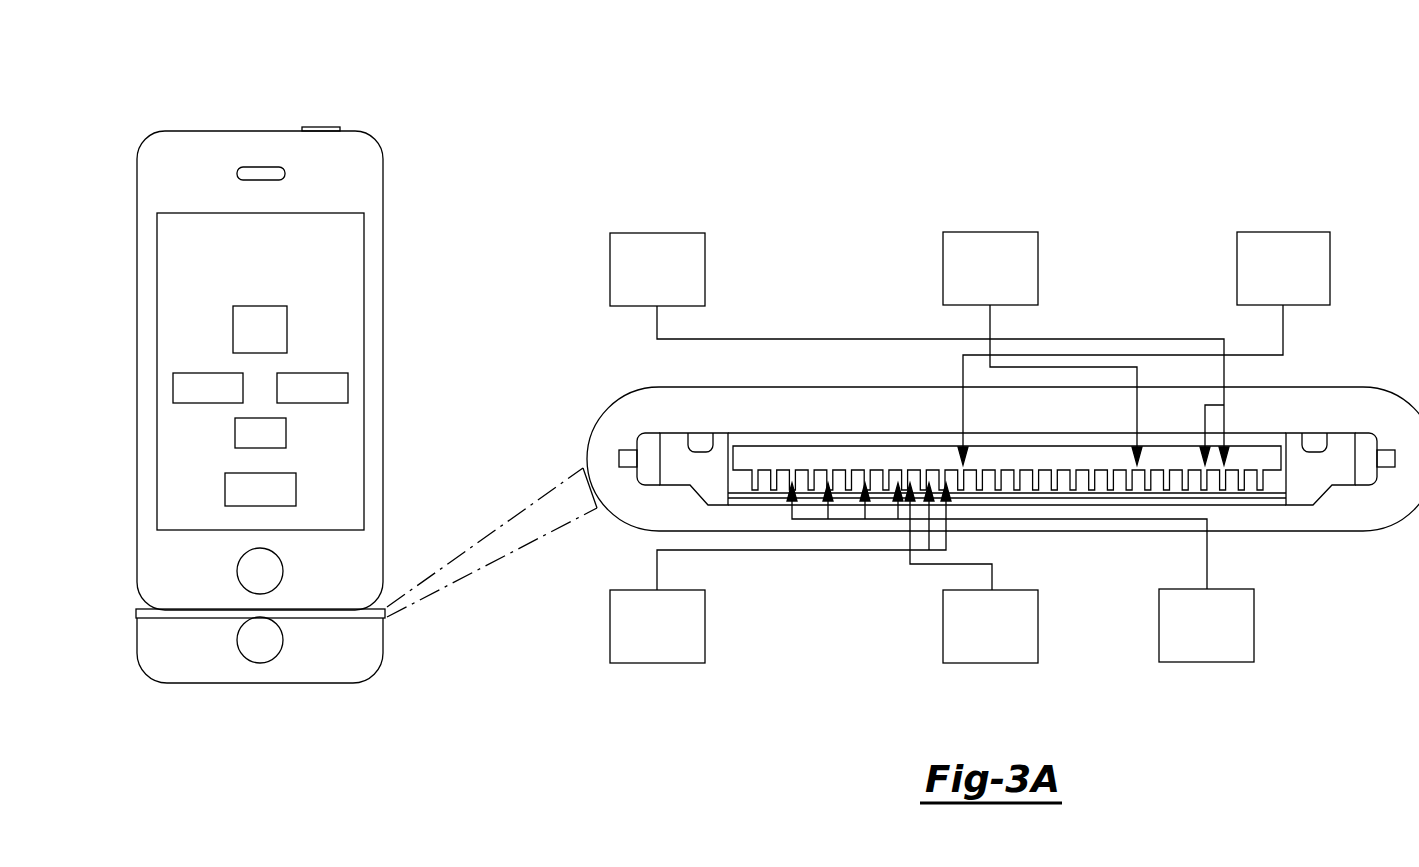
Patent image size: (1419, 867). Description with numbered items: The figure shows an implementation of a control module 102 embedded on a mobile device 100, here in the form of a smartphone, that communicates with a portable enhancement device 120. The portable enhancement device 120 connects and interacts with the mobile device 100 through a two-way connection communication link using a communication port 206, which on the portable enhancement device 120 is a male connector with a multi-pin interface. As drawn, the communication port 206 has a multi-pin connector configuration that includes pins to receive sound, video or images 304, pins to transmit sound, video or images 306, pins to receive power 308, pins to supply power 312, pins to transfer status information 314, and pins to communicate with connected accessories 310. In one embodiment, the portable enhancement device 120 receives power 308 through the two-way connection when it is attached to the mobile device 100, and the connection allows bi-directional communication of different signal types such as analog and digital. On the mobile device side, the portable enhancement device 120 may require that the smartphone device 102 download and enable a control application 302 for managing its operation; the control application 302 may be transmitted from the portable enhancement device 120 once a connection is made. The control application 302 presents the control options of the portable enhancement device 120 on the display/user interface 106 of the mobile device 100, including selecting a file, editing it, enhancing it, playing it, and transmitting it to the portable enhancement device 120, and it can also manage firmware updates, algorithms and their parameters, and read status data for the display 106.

The mobile device 100 is at (210, 130).
The control module 102 is at (278, 261).
The display/user interface 106 is at (345, 240).
The control application 302 is at (348, 390).
The portable enhancement device 120 is at (365, 647).
The communication port 206 is at (390, 606).
The pins to receive sound/video/images 304 is at (671, 280).
The pins to transmit sound/video/images 306 is at (1004, 280).
The pins to supply power 312 is at (1296, 280).
The pins to receive power 308 is at (671, 637).
The pins to communicate with connected accessories 310 is at (1004, 637).
The pins to transfer status information 314 is at (1220, 637).